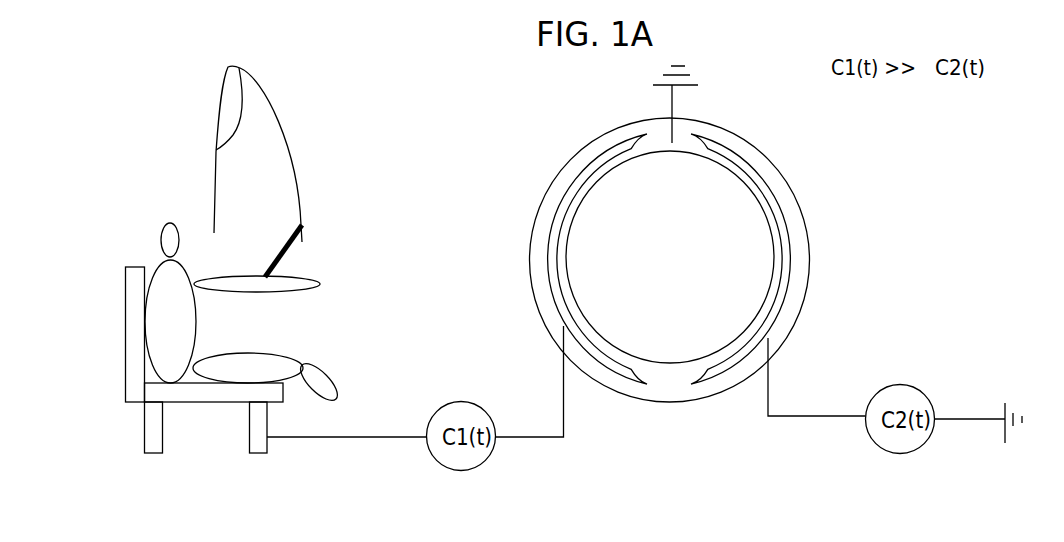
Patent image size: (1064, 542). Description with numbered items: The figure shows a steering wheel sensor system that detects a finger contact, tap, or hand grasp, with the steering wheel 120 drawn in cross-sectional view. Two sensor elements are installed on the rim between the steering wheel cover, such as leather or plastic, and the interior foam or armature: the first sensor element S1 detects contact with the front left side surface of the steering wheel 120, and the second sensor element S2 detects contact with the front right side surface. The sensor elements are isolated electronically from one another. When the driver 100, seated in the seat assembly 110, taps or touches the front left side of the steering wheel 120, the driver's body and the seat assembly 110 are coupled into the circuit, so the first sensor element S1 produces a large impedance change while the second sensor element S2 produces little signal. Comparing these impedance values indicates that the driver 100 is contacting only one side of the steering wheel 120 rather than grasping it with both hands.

The driver 100 is at (154, 263).
The seat assembly 110 is at (126, 365).
The steering wheel 120 is at (811, 280).
The first sensor element S1 is at (579, 177).
The second sensor element S2 is at (778, 201).